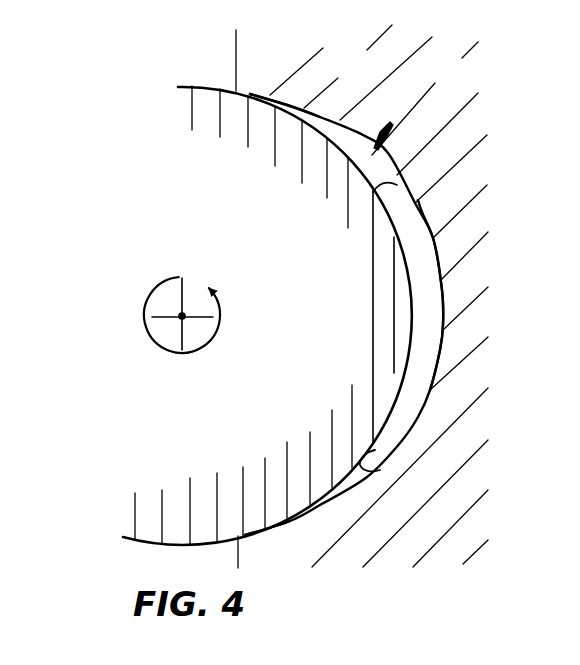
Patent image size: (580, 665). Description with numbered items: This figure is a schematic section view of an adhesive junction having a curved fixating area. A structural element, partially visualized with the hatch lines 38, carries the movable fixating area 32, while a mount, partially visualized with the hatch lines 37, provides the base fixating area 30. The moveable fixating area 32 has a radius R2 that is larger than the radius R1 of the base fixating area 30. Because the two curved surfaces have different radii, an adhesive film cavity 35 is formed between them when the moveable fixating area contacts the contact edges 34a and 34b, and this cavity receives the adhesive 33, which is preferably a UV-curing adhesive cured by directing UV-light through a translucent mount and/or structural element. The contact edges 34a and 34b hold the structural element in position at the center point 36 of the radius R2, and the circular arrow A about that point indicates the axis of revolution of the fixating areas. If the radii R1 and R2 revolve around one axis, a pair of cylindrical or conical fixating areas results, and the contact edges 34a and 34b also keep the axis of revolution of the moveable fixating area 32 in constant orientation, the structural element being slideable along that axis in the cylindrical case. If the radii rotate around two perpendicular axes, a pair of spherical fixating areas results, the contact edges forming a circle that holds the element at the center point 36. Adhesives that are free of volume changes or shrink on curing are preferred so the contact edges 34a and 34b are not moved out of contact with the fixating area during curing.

The base fixating area 30 is at (440, 350).
The movable fixating area 32 is at (403, 310).
The adhesive 33 is at (423, 281).
The contact edge 34a is at (239, 87).
The contact edge 34b is at (240, 535).
The adhesive film cavity 35 is at (402, 120).
The center point 36 is at (180, 327).
The hatch lines 37 is at (458, 523).
The hatch lines 38 is at (135, 507).
The rotation direction A is at (145, 303).
The radius R1 is at (424, 419).
The radius R2 is at (364, 444).